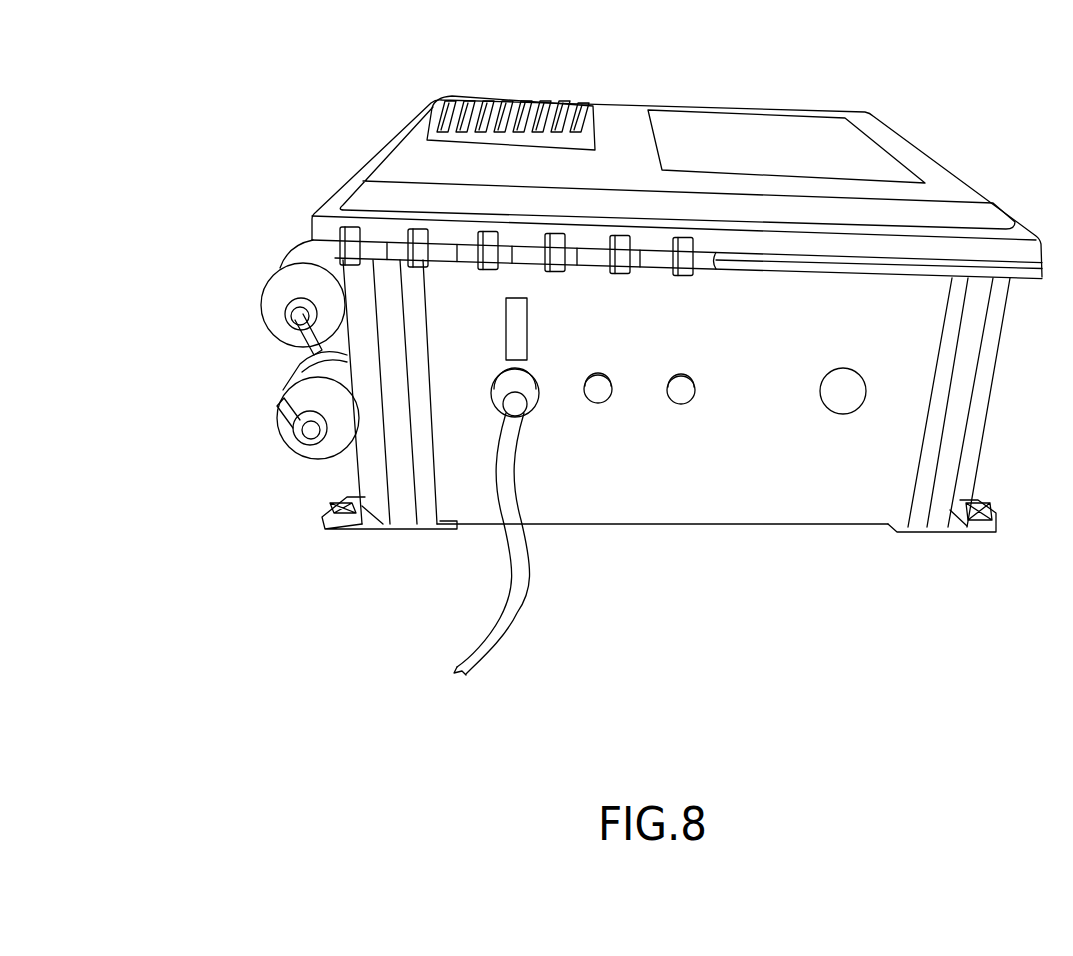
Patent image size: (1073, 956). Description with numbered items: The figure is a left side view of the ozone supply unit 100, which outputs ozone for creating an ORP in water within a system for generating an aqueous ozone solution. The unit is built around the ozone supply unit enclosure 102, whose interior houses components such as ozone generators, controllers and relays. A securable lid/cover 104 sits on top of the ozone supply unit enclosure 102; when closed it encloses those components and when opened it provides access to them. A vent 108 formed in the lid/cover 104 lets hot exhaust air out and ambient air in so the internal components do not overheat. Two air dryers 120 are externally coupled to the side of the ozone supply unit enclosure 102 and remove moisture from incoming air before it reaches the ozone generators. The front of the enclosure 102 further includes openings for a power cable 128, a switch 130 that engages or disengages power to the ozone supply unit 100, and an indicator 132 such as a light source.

The ozone supply unit 100 is at (392, 68).
The ozone supply unit enclosure 102 is at (980, 394).
The securable lid/cover 104 is at (833, 110).
The vent 108 is at (433, 133).
The air dryer 120 is at (272, 303).
The power cable 128 is at (505, 608).
The switch 130 is at (682, 404).
The indicator 132 is at (600, 404).